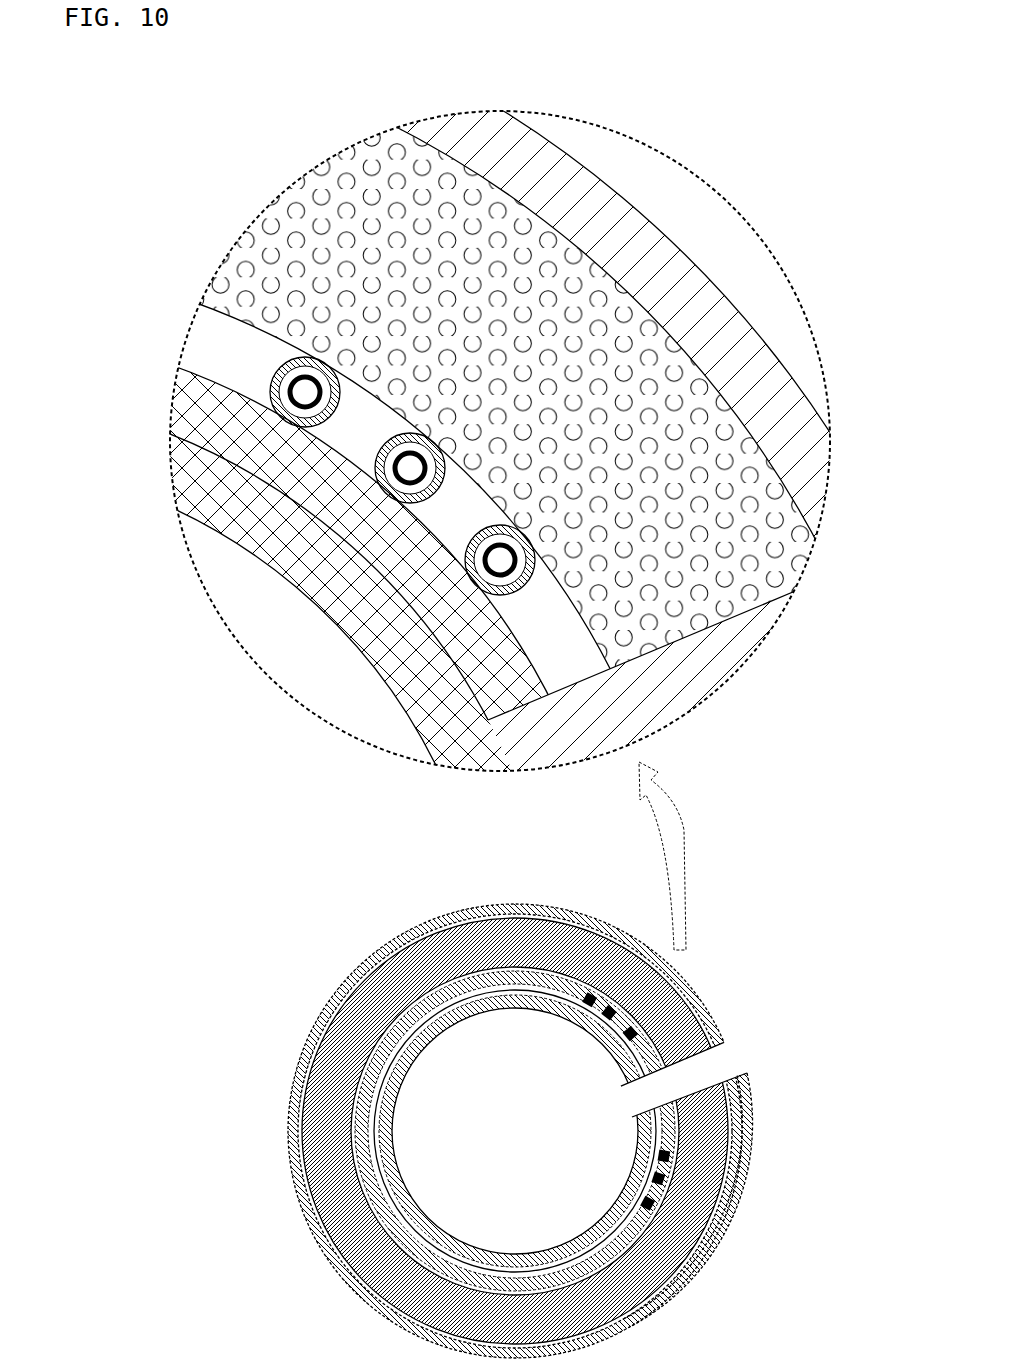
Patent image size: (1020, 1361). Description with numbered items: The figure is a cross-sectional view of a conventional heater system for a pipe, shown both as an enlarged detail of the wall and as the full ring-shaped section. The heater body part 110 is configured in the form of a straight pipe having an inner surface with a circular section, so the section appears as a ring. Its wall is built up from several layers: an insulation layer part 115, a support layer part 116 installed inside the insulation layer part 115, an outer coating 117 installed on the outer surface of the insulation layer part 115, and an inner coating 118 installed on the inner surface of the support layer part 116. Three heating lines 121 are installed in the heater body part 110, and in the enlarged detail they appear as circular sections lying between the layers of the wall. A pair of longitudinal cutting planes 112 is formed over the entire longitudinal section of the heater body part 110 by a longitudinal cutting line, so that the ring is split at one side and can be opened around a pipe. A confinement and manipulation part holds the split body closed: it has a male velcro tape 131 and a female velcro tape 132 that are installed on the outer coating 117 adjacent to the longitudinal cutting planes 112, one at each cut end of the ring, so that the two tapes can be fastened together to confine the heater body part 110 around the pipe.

The heater body part 110 is at (664, 200).
The longitudinal cutting planes 112 is at (643, 1087).
The insulation layer part 115 is at (372, 160).
The support layer part 116 is at (377, 520).
The outer coating 117 is at (683, 320).
The inner coating 118 is at (190, 476).
The heating lines 121 is at (276, 376).
The male velcro tape 131 is at (703, 1003).
The female velcro tape 132 is at (745, 1078).